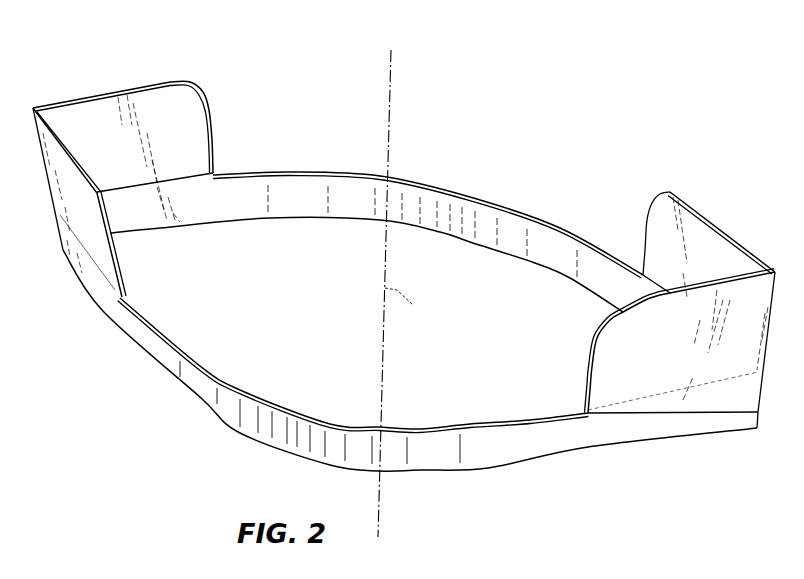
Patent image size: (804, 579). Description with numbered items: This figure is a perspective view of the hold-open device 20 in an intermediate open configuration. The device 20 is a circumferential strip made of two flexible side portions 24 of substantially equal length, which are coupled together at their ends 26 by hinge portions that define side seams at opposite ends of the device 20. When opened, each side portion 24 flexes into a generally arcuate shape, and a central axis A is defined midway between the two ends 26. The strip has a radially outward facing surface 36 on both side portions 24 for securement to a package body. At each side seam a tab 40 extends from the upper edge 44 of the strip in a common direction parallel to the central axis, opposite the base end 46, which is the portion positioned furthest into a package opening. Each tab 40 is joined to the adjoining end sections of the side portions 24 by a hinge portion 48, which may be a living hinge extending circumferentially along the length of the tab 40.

The hold-open device 20 is at (507, 125).
The side portions 24 is at (378, 310).
The ends 26 is at (53, 217).
The radially outward facing surface 36 is at (253, 423).
The tab 40 is at (123, 68).
The upper edge 44 is at (182, 346).
The base end 46 is at (488, 468).
The hinge portion 48 is at (175, 173).